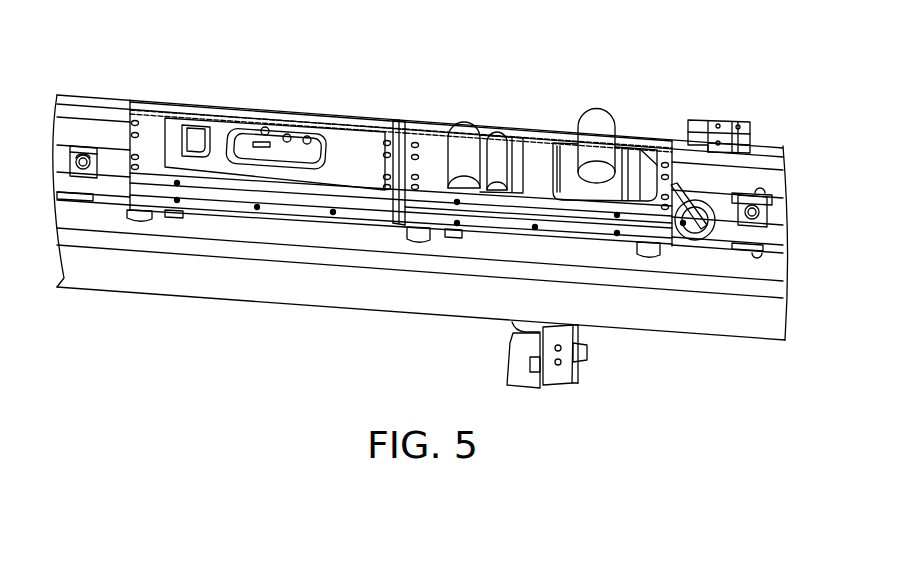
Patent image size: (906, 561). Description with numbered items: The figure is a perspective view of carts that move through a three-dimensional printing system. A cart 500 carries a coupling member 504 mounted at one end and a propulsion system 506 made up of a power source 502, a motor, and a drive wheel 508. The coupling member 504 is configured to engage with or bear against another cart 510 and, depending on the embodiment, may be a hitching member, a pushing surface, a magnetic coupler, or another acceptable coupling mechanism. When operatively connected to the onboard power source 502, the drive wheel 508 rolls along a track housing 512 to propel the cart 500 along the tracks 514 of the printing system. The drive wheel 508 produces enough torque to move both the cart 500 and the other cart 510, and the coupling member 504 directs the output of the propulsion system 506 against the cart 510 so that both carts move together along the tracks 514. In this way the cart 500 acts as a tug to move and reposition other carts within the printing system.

The cart 500 is at (510, 235).
The power source 502 is at (470, 122).
The coupling member 504 is at (400, 163).
The propulsion system 506 is at (607, 120).
The drive wheel 508 is at (690, 248).
The other cart 510 is at (313, 222).
The track housing 512 is at (720, 230).
The tracks 514 is at (93, 127).